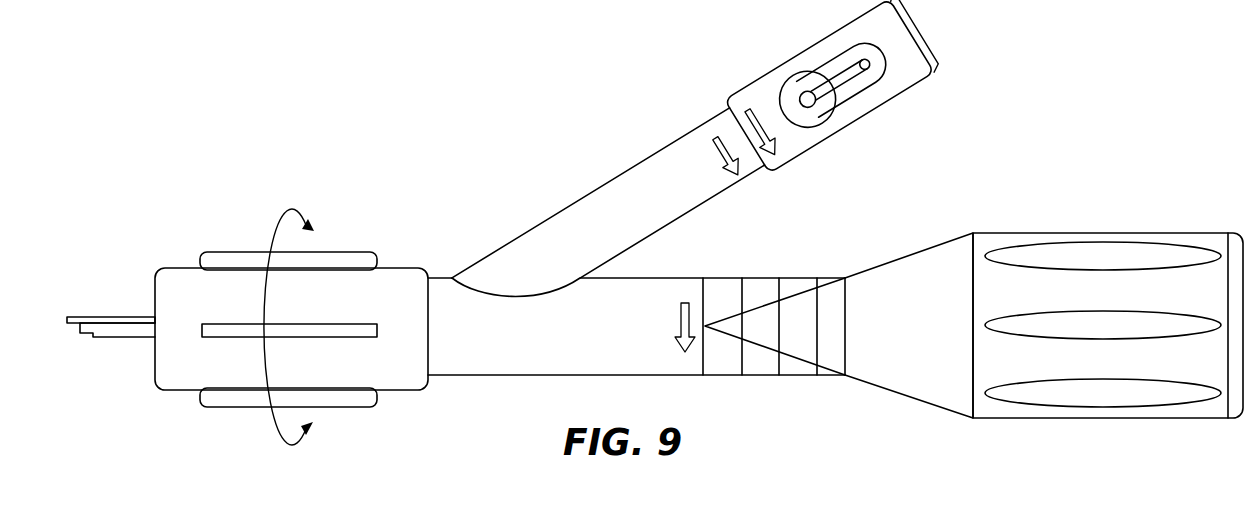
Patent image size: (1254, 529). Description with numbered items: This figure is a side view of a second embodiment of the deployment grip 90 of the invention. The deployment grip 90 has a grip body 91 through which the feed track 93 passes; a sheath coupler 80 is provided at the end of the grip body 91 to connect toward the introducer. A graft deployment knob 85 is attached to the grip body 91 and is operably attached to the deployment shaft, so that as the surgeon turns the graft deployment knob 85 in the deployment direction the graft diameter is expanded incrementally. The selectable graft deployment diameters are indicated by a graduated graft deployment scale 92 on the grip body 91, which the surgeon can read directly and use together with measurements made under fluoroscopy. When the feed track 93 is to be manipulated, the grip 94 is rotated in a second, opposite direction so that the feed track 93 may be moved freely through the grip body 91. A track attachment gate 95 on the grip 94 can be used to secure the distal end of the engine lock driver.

The sheath coupler 80 is at (235, 262).
The graft deployment knob 85 is at (1193, 233).
The deployment device 90 is at (452, 218).
The grip body 91 is at (460, 367).
The graduated graft deployment scale 92 is at (758, 363).
The feed track 93 is at (115, 322).
The grip 94 is at (785, 68).
The track attachment gate 95 is at (853, 90).